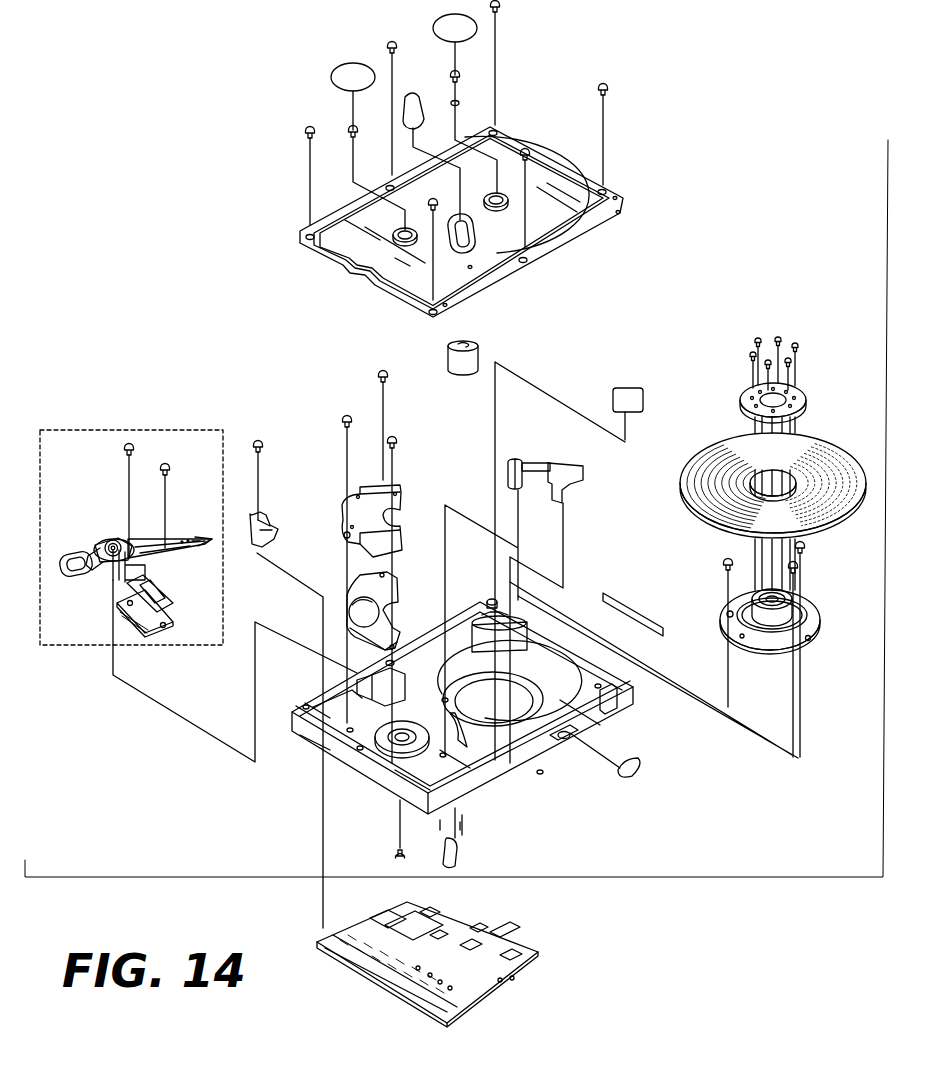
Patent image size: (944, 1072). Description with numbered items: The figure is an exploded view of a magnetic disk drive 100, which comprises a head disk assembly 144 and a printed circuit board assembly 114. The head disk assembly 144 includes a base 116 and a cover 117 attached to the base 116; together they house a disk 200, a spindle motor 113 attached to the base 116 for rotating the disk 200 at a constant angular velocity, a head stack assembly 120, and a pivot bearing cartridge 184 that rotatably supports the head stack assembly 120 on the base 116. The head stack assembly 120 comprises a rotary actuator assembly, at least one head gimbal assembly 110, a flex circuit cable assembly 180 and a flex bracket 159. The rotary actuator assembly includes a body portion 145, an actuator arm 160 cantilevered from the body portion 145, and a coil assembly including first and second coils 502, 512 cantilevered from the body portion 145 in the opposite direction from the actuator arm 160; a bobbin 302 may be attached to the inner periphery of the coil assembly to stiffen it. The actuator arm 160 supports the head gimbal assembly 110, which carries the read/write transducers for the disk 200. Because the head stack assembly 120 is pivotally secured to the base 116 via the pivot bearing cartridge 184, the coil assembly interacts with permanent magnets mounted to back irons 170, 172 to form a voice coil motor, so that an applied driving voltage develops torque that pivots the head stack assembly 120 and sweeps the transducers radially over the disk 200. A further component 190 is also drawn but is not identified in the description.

The magnetic disk drive 100 is at (718, 903).
The head gimbal assembly 110 is at (207, 540).
The spindle motor 113 is at (712, 593).
The printed circuit board assembly 114 is at (482, 990).
The base 116 is at (515, 780).
The cover 117 is at (587, 223).
The head stack assembly 120 is at (131, 517).
The head disk assembly 144 is at (616, 880).
The body portion 145 is at (127, 543).
The flex bracket 159 is at (173, 613).
The actuator arm 160 is at (142, 537).
The back iron 170 is at (345, 517).
The back iron 172 is at (397, 593).
The flex circuit cable assembly 180 is at (145, 565).
The pivot bearing cartridge 184 is at (100, 543).
The ramp 190 is at (367, 610).
The disk 200 is at (705, 452).
The bobbin 302 is at (92, 553).
The first coil 502 is at (66, 594).
The second coil 512 is at (65, 575).